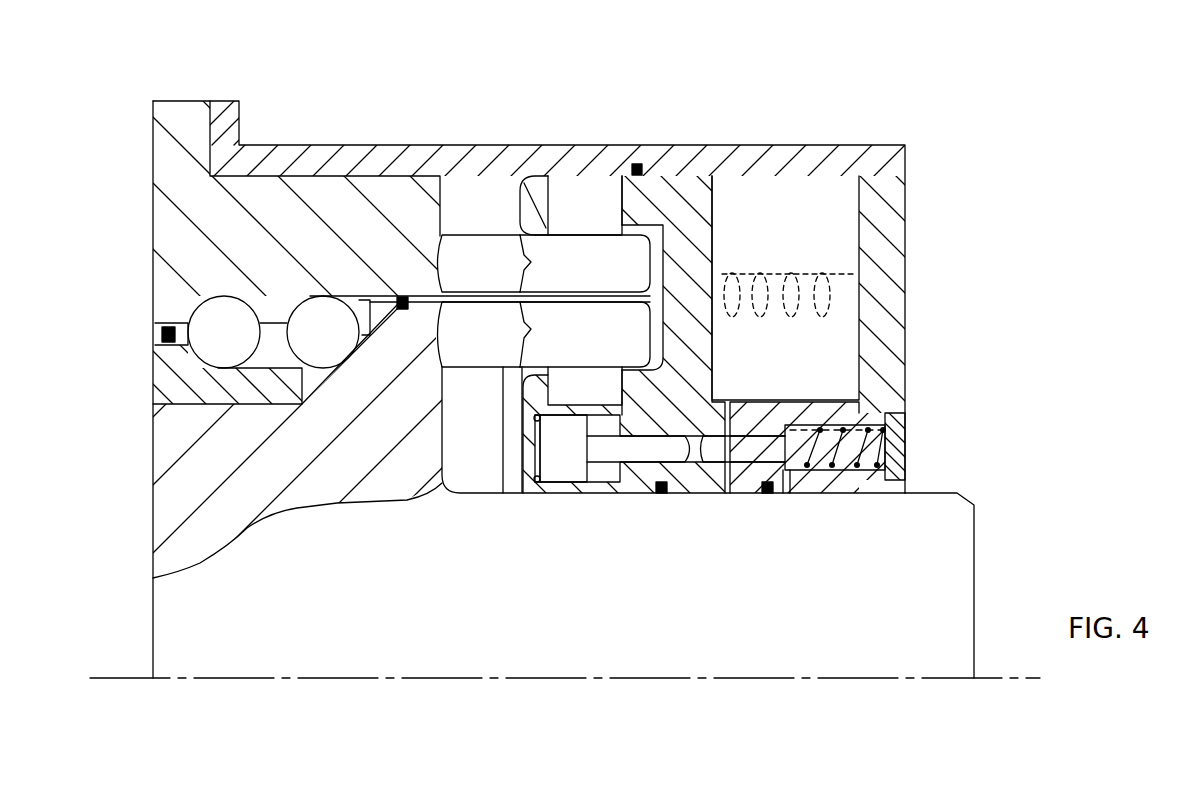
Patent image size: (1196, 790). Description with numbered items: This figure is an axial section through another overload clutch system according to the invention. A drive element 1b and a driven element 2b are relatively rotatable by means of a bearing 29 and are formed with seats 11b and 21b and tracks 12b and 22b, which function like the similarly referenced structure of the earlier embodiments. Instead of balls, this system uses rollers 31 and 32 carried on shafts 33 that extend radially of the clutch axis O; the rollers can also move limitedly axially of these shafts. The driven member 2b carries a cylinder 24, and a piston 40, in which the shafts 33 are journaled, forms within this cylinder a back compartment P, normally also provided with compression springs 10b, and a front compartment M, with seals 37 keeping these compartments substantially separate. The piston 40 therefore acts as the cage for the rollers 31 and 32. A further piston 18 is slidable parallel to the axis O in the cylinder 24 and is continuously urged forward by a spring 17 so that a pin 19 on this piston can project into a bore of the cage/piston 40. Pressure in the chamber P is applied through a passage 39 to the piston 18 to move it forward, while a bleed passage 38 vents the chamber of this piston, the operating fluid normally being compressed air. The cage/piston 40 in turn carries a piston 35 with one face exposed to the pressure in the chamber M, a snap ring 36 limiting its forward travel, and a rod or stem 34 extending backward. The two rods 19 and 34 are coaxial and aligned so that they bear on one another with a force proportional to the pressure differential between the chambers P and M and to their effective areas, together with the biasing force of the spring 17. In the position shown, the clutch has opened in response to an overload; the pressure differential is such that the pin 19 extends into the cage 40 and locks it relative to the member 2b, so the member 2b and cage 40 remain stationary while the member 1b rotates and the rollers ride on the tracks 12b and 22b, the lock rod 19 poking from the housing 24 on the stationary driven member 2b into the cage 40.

The drive element 1b is at (183, 483).
The driven element 2b is at (180, 178).
The bearing 29 is at (320, 333).
The seals 37 is at (397, 293).
The cylinder 24 is at (878, 158).
The back compartment P is at (792, 240).
The compression springs 10b is at (788, 320).
The piston 40 is at (697, 203).
The roller 31 is at (623, 330).
The shafts 33 is at (578, 205).
The seat 21b is at (483, 258).
The track 22b is at (523, 240).
The roller 32 is at (560, 263).
The seat 11b is at (463, 413).
The track 12b is at (503, 493).
The front compartment M is at (440, 462).
The piston 35 is at (565, 458).
The snap ring 36 is at (540, 420).
The rod or stem 34 is at (635, 453).
The bleed passage 38 is at (788, 493).
The passage 39 is at (758, 452).
The pin 19 is at (790, 448).
The spring 17 is at (873, 433).
The piston 18 is at (883, 415).
The clutch axis O is at (806, 678).